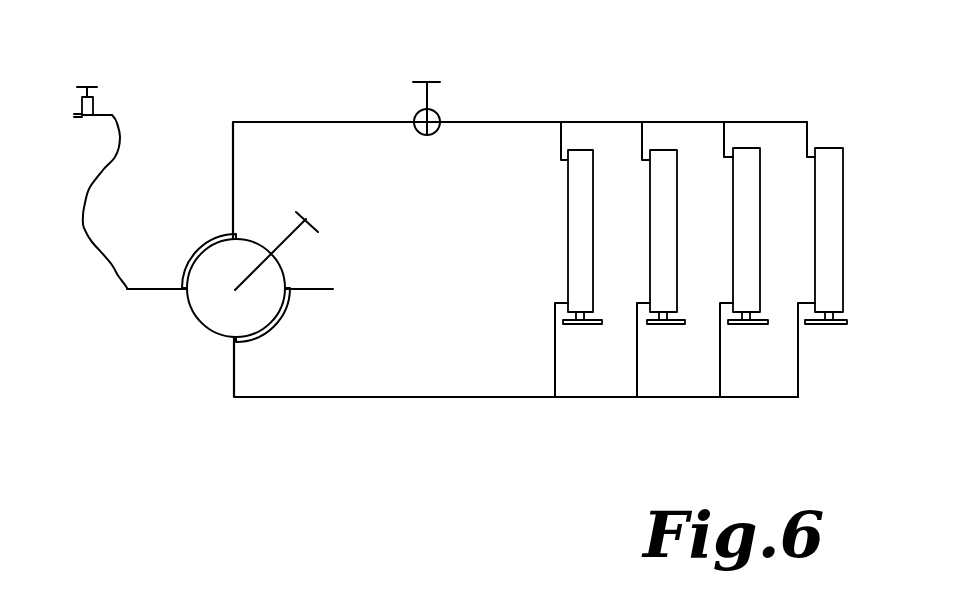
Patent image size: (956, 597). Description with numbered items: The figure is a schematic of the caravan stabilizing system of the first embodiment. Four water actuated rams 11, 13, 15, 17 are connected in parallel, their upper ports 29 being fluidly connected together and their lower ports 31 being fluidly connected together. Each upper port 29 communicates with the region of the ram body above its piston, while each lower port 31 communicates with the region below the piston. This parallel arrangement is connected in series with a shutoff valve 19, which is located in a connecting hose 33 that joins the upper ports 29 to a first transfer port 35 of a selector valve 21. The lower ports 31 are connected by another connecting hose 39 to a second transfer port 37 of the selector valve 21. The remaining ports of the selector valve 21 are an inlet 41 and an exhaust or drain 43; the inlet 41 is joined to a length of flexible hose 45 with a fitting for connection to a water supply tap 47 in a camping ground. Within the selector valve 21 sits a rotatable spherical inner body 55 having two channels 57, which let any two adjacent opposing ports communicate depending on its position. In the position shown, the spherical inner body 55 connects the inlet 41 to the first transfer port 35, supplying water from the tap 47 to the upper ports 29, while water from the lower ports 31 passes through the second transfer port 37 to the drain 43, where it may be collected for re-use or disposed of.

The water actuated ram 11 is at (575, 150).
The water actuated ram 13 is at (658, 150).
The water actuated ram 15 is at (753, 147).
The water actuated ram 17 is at (837, 147).
The shutoff valve 19 is at (436, 115).
The selector valve 21 is at (287, 267).
The upper port 29 is at (563, 160).
The lower port 31 is at (560, 303).
The connecting hose 33 is at (332, 121).
The first transfer port 35 is at (236, 237).
The second transfer port 37 is at (234, 350).
The connecting hose 39 is at (392, 397).
The inlet 41 is at (177, 291).
The exhaust or drain 43 is at (300, 291).
The flexible hose 45 is at (93, 210).
The water supply tap 47 is at (93, 103).
The spherical inner body 55 is at (242, 263).
The channels 57 is at (210, 248).